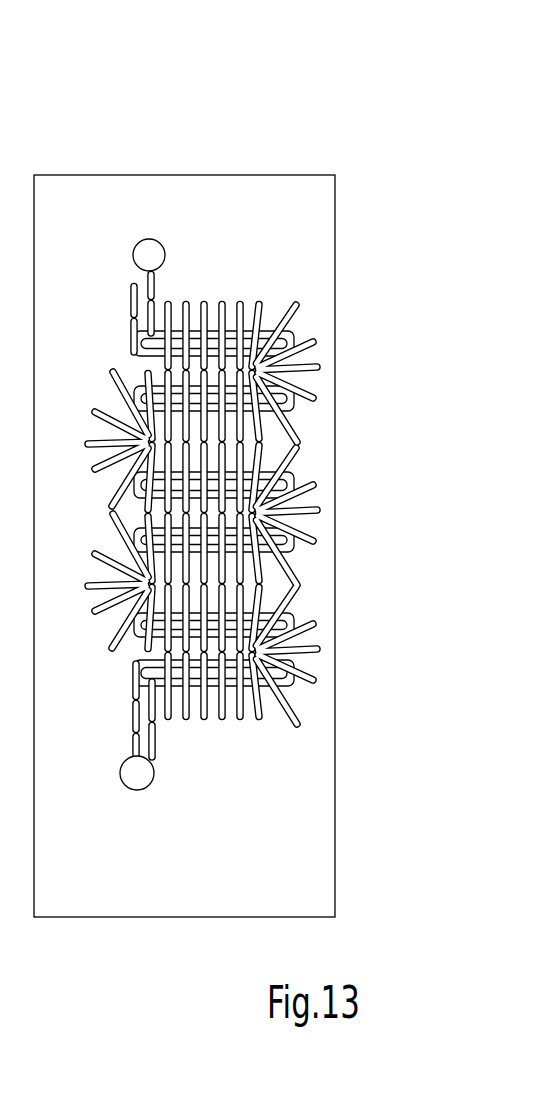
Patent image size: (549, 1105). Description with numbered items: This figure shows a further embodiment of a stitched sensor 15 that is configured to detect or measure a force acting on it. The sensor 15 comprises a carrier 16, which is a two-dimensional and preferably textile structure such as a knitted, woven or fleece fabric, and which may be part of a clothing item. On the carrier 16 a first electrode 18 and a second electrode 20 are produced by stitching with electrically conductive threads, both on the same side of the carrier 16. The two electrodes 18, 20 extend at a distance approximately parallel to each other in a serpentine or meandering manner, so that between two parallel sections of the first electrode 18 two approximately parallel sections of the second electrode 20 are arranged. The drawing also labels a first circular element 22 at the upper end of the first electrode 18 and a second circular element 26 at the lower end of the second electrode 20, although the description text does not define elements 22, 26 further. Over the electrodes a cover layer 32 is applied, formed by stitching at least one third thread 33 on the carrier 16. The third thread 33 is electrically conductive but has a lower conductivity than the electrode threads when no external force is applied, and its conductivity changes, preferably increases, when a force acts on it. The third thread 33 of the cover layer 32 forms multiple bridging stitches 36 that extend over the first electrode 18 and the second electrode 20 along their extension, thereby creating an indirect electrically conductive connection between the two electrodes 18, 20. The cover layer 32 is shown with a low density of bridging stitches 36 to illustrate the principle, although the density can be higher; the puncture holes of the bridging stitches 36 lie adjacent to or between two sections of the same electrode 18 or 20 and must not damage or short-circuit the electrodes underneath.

The sensor 15 is at (224, 468).
The carrier 16 is at (312, 195).
The first electrode 18 is at (162, 282).
The second electrode 20 is at (113, 755).
The inlet port 22 is at (145, 252).
The outlet port 26 is at (137, 778).
The cover layer 32 is at (180, 538).
The third thread 33 is at (202, 300).
The bridging stitches 36 is at (313, 340).